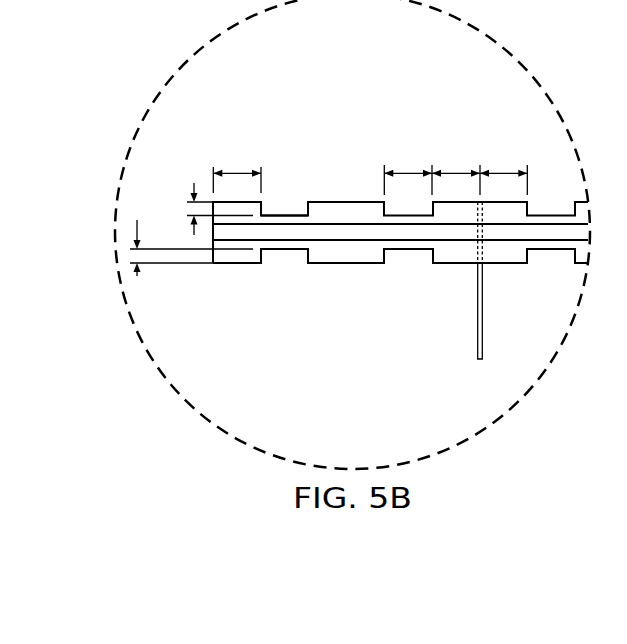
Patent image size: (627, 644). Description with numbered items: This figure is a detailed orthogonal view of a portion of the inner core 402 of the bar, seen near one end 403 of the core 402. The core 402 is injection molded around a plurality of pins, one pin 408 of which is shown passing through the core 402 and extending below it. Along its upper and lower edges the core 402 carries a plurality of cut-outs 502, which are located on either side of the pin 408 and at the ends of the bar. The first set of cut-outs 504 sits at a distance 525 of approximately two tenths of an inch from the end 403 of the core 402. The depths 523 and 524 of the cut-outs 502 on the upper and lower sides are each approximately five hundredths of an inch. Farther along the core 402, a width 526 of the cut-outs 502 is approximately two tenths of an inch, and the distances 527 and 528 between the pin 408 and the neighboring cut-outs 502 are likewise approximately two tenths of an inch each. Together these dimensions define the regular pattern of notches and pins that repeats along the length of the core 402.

The inner core 402 is at (292, 120).
The end 403 is at (213, 233).
The pin 408 is at (478, 329).
The cut-outs 502 is at (291, 270).
The first set of cut-outs 504 is at (291, 200).
The depth 523 is at (194, 183).
The depth 524 is at (137, 283).
The distance 525 is at (237, 170).
The width 526 is at (408, 170).
The distance 527 is at (457, 170).
The distance 528 is at (503, 170).